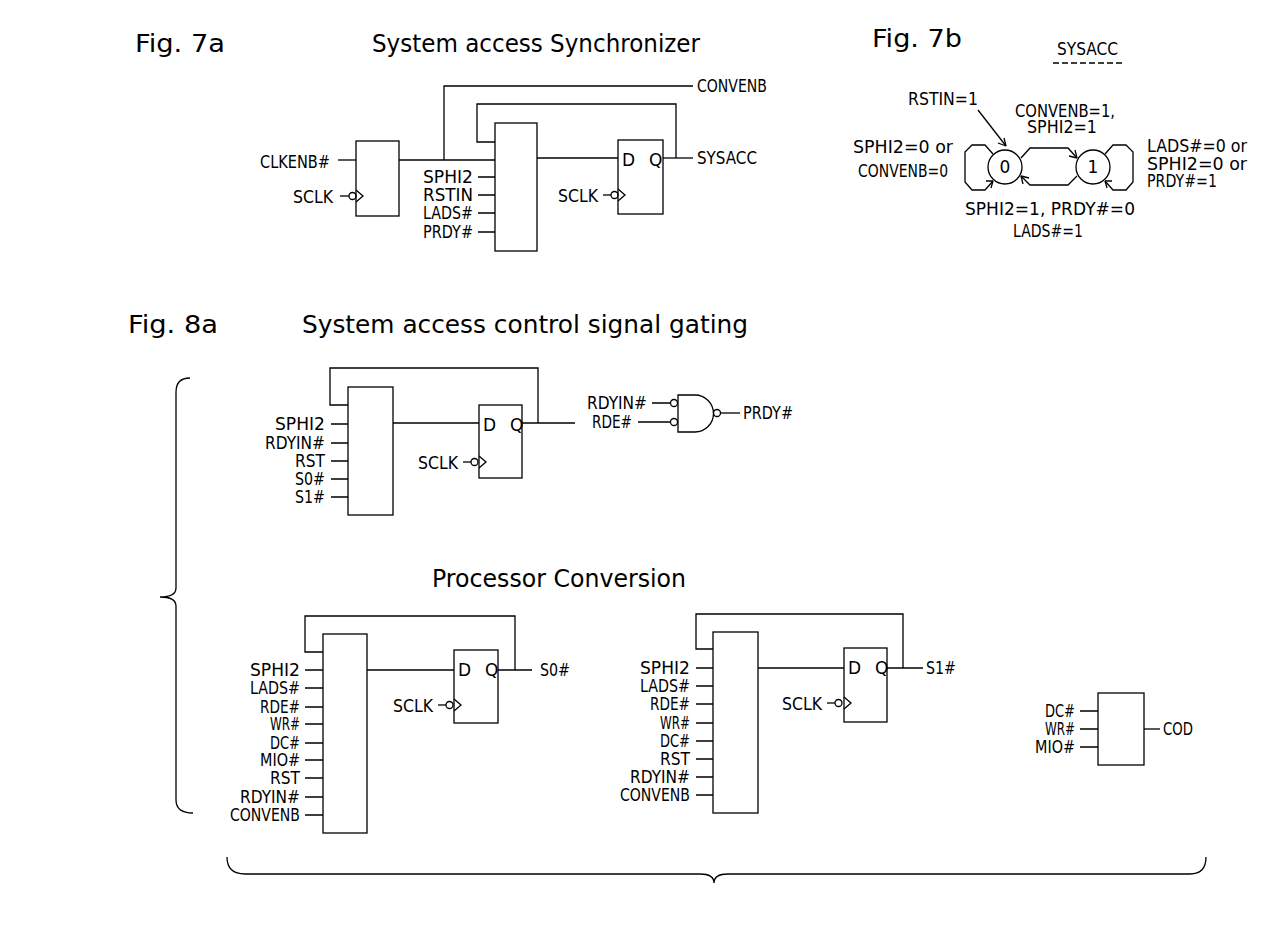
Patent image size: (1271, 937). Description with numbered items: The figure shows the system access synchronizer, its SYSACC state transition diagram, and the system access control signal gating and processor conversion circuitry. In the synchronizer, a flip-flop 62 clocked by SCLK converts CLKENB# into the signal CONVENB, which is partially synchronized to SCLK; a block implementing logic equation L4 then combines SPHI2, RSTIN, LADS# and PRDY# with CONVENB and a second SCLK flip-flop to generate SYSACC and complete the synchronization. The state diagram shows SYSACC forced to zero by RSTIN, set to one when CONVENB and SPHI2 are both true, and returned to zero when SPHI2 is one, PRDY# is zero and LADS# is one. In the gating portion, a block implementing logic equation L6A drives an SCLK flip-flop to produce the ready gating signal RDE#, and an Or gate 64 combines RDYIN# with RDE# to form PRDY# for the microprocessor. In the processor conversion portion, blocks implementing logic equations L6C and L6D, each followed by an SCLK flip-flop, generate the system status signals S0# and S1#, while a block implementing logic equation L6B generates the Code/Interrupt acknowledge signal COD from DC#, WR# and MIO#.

In FIG. 7A, the flip-flop 62 is at (374, 178).
In FIG. 8A, the Or gate 64 is at (696, 413).
In FIG. 7A, the logic equation L4 is at (516, 187).
In FIG. 8A, the logic equation L6A is at (370, 451).
In FIG. 8A, the logic equation L6B is at (1121, 729).
In FIG. 8A, the logic equation L6C is at (345, 733).
In FIG. 8A, the logic equation L6D is at (735, 722).